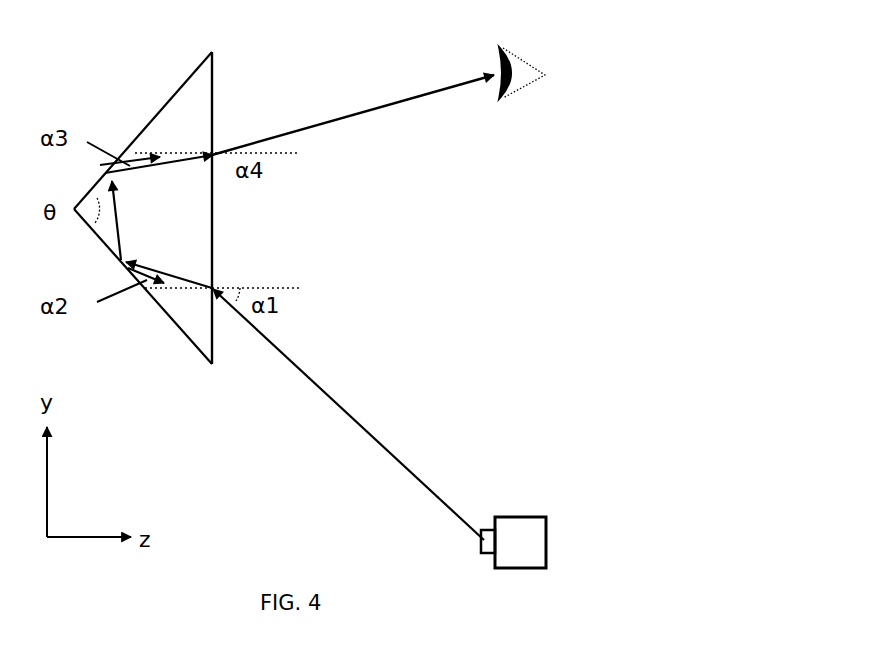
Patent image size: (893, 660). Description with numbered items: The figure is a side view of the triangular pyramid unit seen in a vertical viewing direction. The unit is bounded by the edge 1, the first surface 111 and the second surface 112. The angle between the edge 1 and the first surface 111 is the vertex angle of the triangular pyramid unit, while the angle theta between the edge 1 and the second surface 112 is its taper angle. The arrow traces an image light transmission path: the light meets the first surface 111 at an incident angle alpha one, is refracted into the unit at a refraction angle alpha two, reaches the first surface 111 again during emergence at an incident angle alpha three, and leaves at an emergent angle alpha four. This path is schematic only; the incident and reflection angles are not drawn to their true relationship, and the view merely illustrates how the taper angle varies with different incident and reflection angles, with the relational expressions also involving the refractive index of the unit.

The edge 1 is at (172, 97).
The first surface 111 is at (209, 118).
The second surface 112 is at (175, 323).